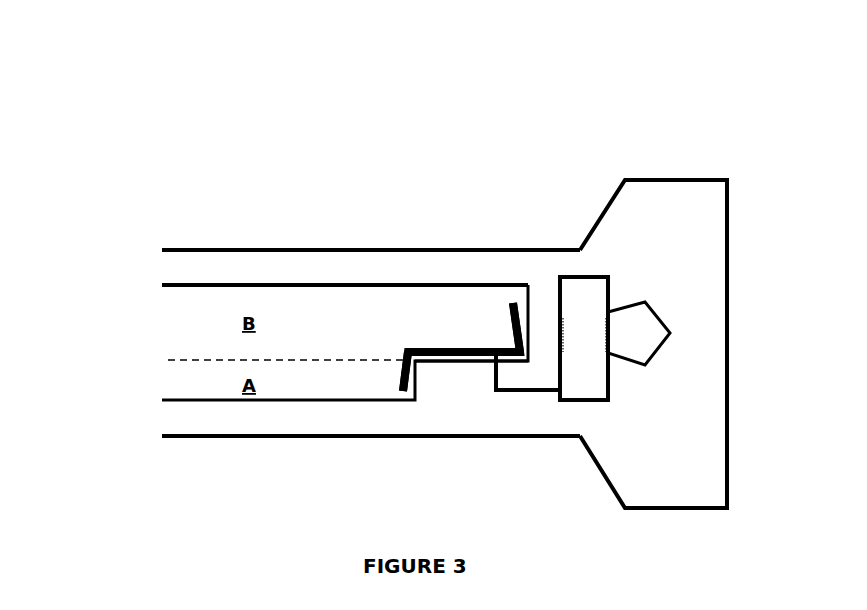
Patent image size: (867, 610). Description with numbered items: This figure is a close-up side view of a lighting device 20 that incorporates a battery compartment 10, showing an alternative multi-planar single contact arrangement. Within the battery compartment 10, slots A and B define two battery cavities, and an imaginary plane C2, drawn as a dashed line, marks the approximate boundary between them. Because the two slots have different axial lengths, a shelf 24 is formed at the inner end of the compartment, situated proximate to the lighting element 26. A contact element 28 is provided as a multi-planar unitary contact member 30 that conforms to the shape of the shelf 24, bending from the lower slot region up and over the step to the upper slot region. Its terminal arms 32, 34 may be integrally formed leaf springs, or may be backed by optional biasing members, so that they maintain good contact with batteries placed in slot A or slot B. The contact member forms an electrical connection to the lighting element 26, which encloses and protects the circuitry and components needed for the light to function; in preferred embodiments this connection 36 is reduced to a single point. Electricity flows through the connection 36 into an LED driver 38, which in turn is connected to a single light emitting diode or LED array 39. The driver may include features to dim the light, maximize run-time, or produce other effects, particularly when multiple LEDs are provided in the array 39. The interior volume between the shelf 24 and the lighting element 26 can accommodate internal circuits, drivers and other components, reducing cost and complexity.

The lighting device 20 is at (183, 230).
The battery compartment 10 is at (208, 265).
The shelf 24 is at (457, 385).
The imaginary plane C2 is at (285, 360).
The contact element 28 is at (470, 328).
The terminal arm 32 is at (401, 390).
The terminal arm 34 is at (513, 300).
The multi-planar unitary contact member 30 is at (476, 357).
The connection 36 is at (528, 392).
The lighting element 26 is at (602, 263).
The LED driver 38 is at (584, 338).
The LED array 39 is at (639, 333).